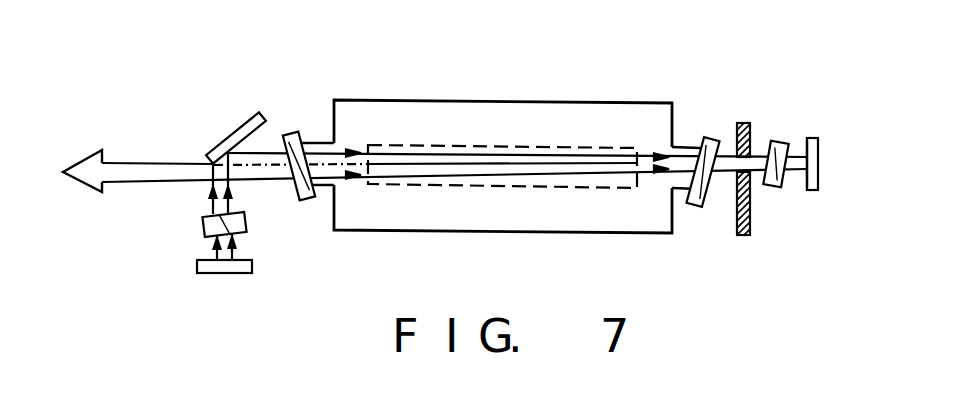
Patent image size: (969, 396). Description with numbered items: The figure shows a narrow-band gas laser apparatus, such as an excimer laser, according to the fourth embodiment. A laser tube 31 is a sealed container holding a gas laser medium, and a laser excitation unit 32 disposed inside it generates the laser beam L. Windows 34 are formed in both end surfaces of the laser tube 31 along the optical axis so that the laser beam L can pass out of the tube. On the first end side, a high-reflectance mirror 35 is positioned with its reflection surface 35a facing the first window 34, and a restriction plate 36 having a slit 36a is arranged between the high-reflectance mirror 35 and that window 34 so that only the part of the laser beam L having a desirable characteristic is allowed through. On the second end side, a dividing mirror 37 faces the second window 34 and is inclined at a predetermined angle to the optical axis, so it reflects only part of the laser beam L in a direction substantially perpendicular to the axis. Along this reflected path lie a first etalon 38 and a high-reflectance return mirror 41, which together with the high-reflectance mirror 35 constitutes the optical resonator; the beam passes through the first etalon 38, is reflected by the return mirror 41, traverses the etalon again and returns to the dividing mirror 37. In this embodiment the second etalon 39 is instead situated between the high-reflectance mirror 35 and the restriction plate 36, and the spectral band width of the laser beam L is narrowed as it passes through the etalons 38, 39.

The laser tube 31 is at (408, 100).
The laser excitation unit 32 is at (587, 147).
The window 34 is at (298, 134).
The high-reflectance mirror 35 is at (820, 158).
The reflection surface 35a is at (803, 186).
The restriction plate 36 is at (749, 208).
The slit 36a is at (746, 162).
The dividing mirror 37 is at (235, 130).
The first etalon 38 is at (201, 226).
The second etalon 39 is at (781, 185).
The high-reflectance return mirror 41 is at (253, 267).
The laser beam L is at (135, 164).